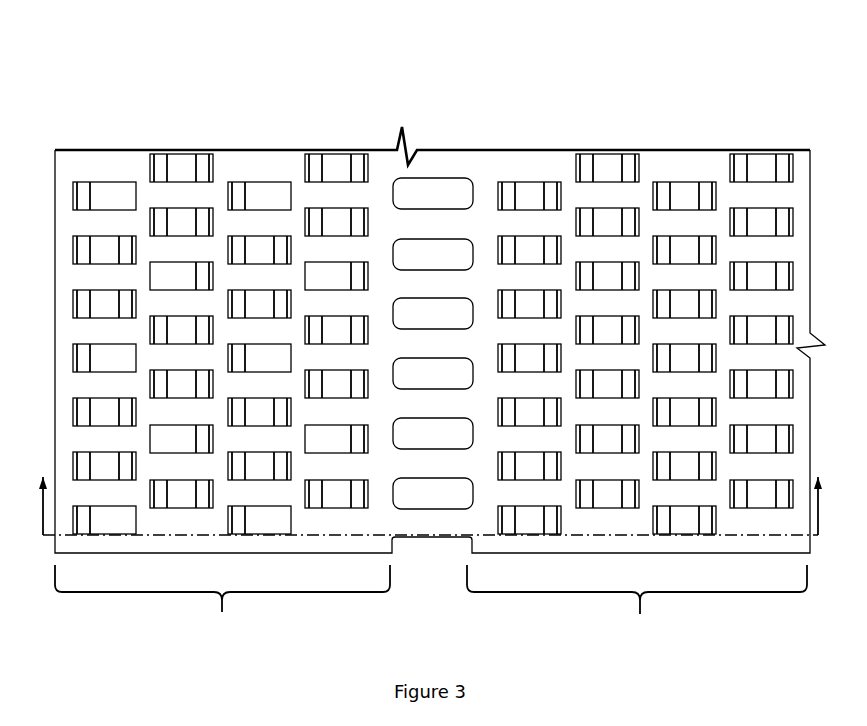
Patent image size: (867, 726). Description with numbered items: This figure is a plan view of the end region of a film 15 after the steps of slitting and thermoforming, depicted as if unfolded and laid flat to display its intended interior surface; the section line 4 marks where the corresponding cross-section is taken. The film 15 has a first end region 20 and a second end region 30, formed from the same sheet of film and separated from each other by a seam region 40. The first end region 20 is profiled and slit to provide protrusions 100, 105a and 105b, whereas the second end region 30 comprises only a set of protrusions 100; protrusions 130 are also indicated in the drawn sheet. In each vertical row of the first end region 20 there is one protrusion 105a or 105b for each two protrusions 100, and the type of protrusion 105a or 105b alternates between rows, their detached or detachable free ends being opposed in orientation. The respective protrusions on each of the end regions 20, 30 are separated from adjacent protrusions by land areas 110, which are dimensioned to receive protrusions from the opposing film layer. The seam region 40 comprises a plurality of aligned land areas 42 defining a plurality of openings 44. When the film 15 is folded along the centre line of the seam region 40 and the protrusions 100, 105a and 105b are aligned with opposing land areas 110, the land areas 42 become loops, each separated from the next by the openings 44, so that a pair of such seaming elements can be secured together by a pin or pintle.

The film 15 is at (440, 289).
The first end region 20 is at (222, 603).
The second end region 30 is at (637, 603).
The seam region 40 is at (464, 280).
The land areas 42 is at (433, 362).
The openings 44 is at (460, 252).
The protrusions 100 is at (134, 237).
The protrusions 105a is at (203, 257).
The protrusions 105b is at (95, 172).
The land areas 110 is at (295, 217).
The component 130 is at (753, 208).
The section line 4- 4 is at (428, 520).